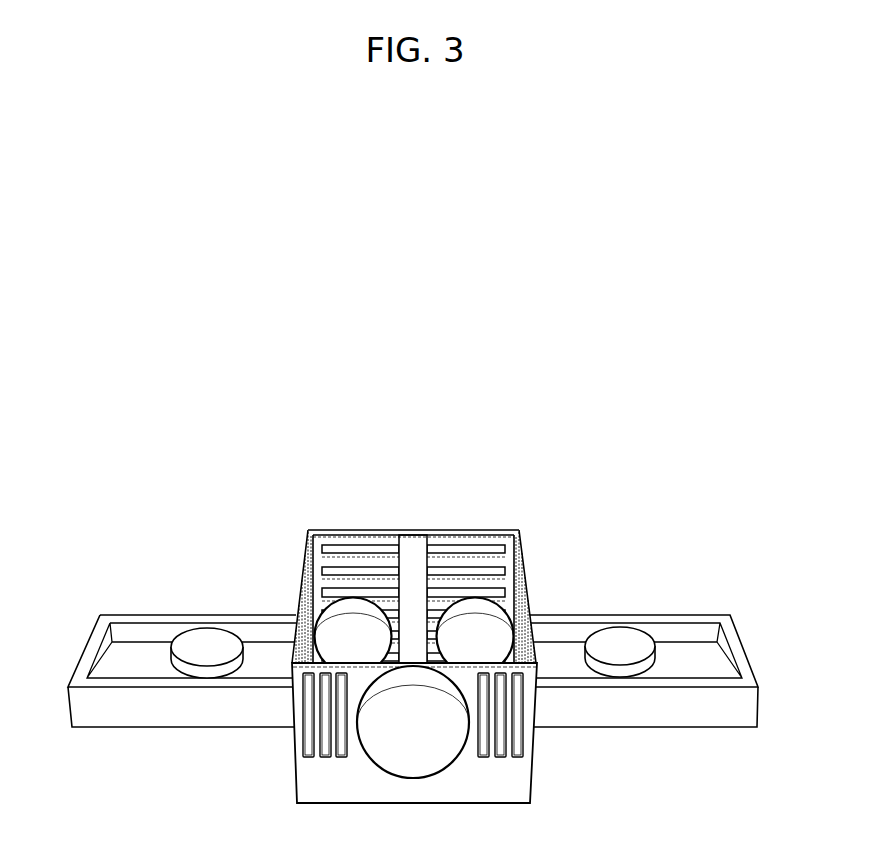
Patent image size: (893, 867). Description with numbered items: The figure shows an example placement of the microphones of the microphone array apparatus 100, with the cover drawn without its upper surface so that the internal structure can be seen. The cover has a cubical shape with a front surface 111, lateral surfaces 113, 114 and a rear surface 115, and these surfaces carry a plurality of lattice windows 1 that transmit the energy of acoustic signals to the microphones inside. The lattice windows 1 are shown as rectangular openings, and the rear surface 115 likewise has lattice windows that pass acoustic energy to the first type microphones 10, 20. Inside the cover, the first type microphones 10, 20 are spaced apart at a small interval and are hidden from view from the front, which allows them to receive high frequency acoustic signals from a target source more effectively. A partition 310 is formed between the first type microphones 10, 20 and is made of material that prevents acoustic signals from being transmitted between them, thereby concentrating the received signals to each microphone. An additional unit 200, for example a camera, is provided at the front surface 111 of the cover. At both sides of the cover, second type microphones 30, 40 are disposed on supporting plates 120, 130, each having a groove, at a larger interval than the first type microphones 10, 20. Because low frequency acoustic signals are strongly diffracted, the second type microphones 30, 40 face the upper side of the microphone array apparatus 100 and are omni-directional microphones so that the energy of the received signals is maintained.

The microphone array apparatus 100 is at (572, 492).
The front surface 111 is at (488, 793).
The lateral surface 113 is at (317, 592).
The lateral surface 114 is at (512, 590).
The rear surface 115 is at (333, 540).
The supporting plate 120 is at (142, 717).
The supporting plate 130 is at (643, 720).
The lattice window 1 is at (327, 743).
The first type microphone 10 is at (357, 606).
The first type microphone 20 is at (475, 606).
The second type microphone 30 is at (204, 635).
The second type microphone 40 is at (619, 632).
The additional unit 200 is at (415, 768).
The partition 310 is at (413, 545).